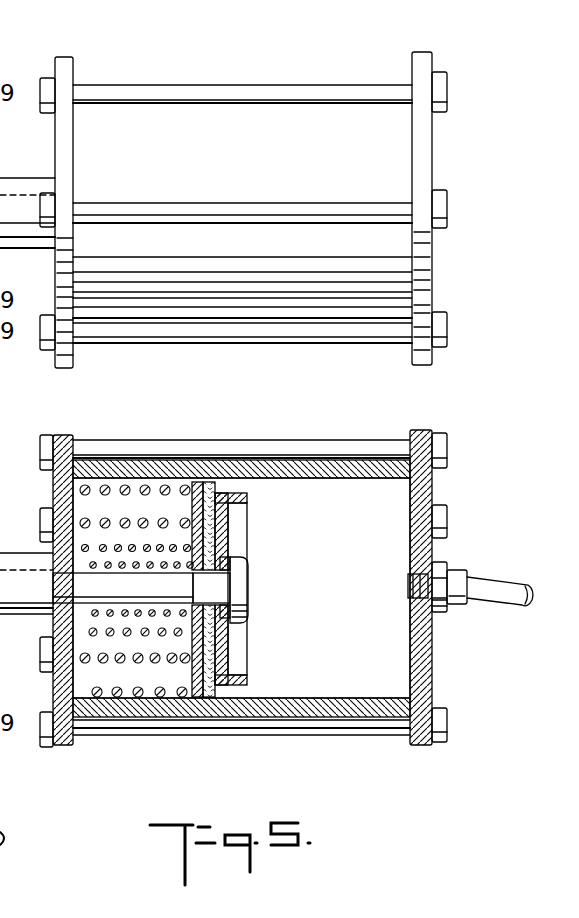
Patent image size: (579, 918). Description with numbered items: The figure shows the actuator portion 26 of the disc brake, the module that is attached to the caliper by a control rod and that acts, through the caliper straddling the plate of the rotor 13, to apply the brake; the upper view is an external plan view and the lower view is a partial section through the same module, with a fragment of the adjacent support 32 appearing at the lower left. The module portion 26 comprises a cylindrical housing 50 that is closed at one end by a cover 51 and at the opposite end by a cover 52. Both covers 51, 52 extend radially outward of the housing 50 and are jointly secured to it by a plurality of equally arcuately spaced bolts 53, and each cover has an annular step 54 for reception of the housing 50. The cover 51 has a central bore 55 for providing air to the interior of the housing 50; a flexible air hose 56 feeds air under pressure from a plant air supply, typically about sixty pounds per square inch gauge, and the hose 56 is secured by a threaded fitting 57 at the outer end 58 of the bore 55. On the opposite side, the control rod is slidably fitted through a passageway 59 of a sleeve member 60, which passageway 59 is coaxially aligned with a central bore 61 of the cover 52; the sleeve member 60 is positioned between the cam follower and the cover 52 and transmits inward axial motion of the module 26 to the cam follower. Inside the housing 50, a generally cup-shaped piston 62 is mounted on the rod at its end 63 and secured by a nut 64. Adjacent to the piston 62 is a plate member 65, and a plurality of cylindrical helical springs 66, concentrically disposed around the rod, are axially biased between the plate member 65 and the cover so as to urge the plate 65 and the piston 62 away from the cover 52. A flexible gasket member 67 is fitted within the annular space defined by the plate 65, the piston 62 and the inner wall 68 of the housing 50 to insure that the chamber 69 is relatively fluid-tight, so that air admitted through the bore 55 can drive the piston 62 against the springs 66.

In FIG. 4, the rotor 13 is at (16, 370).
In FIG. 4, the actuator portion 26 is at (452, 290).
In FIG. 5, the actuator portion 26 is at (457, 685).
In FIG. 5, the support 32 is at (0, 908).
In FIG. 4, the cylindrical housing 50 is at (255, 172).
In FIG. 5, the cylindrical housing 50 is at (307, 703).
In FIG. 4, the cover 51 is at (412, 66).
In FIG. 5, the cover 51 is at (412, 433).
In FIG. 4, the cover 52 is at (73, 66).
In FIG. 5, the cover 52 is at (62, 440).
In FIG. 4, the bolts 53 is at (265, 85).
In FIG. 5, the bolts 53 is at (218, 448).
In FIG. 5, the annular step 54 is at (83, 476).
In FIG. 5, the central bore 55 is at (408, 595).
In FIG. 5, the flexible air hose 56 is at (515, 588).
In FIG. 5, the threaded fitting 57 is at (456, 578).
In FIG. 5, the outer end 58 is at (406, 598).
In FIG. 4, the passageway 59 is at (0, 183).
In FIG. 5, the passageway 59 is at (14, 493).
In FIG. 4, the sleeve member 60 is at (26, 292).
In FIG. 5, the sleeve member 60 is at (26, 656).
In FIG. 5, the central bore 61 is at (48, 532).
In FIG. 5, the piston 62 is at (245, 500).
In FIG. 5, the end 63 is at (250, 590).
In FIG. 5, the nut 64 is at (243, 580).
In FIG. 5, the plate member 65 is at (196, 697).
In FIG. 5, the cylindrical helical springs 66 is at (130, 565).
In FIG. 5, the flexible gasket member 67 is at (232, 690).
In FIG. 5, the inner wall 68 is at (275, 697).
In FIG. 5, the chamber 69 is at (400, 492).